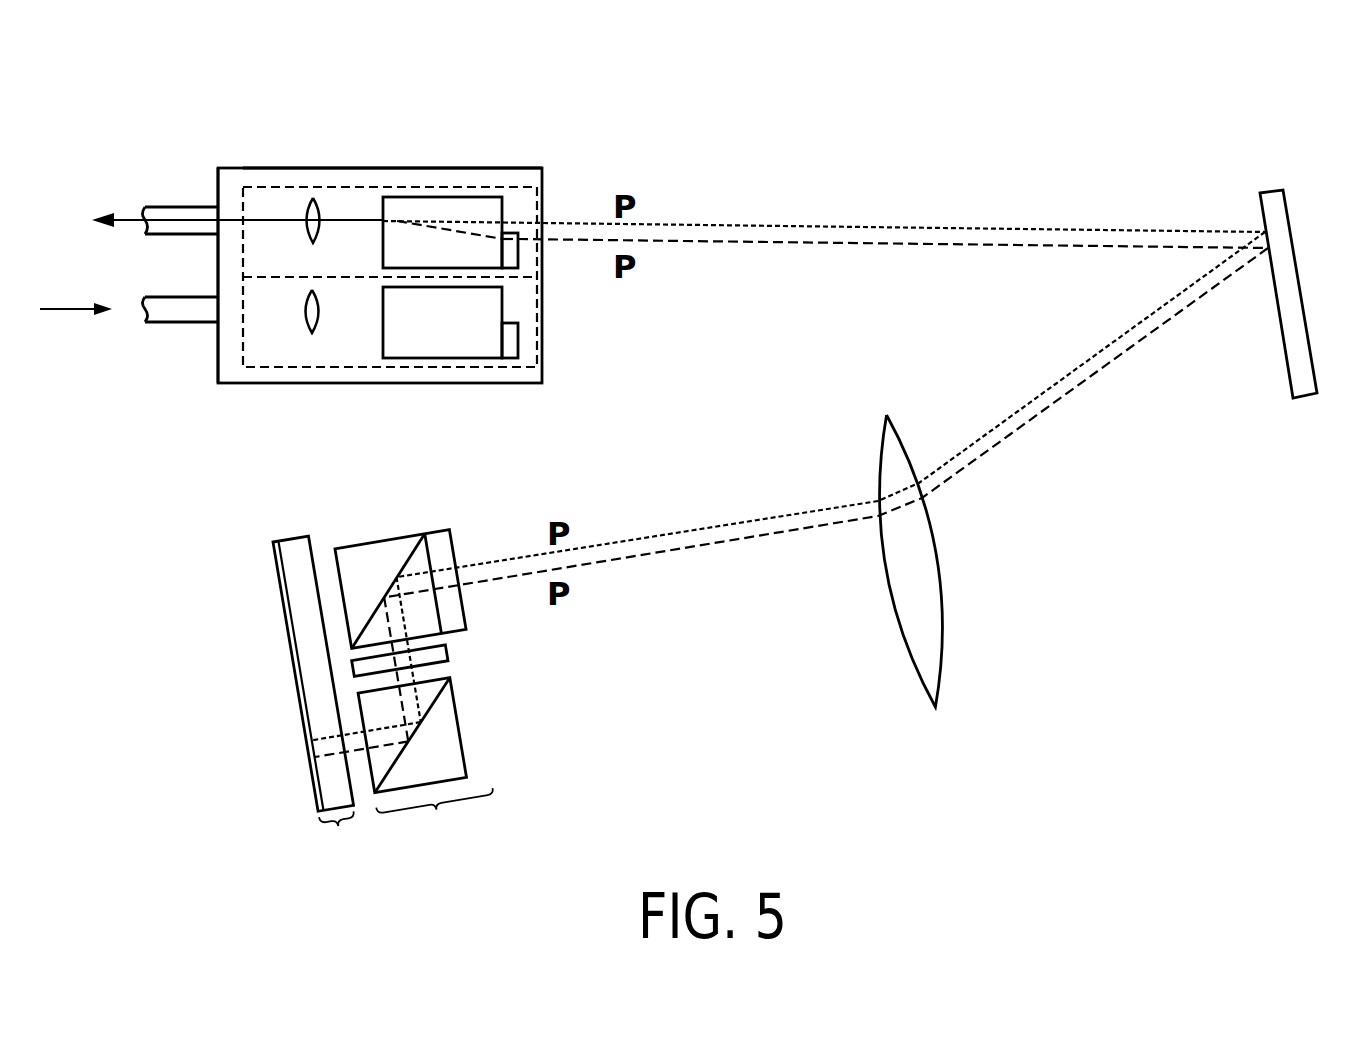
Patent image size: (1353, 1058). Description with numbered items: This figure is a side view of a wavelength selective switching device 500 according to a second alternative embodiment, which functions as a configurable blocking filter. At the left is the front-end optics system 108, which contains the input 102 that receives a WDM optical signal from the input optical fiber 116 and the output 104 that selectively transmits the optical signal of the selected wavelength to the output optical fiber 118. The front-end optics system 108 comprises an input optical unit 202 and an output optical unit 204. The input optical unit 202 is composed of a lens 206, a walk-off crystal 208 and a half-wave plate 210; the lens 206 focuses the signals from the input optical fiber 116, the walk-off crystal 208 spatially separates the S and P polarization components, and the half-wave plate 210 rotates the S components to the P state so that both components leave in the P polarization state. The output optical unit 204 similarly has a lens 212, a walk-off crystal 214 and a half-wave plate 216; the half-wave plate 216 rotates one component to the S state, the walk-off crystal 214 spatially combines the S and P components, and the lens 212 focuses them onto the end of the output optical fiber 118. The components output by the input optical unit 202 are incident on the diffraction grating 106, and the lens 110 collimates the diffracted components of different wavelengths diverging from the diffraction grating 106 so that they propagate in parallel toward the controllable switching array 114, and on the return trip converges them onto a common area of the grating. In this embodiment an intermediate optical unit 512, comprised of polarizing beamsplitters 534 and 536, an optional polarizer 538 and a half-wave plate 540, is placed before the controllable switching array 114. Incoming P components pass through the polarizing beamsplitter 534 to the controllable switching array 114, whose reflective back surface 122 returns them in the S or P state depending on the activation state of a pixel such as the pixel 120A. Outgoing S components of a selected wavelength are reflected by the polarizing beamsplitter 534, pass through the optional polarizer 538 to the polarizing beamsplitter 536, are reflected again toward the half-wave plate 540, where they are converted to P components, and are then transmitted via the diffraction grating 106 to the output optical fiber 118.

The wavelength selective switching device 500 is at (1153, 93).
The input 102 is at (218, 352).
The output 104 is at (219, 217).
The front-end optics system 108 is at (350, 168).
The input optical unit 202 is at (372, 367).
The output optical fiber 118 is at (172, 207).
The input optical fiber 116 is at (168, 322).
The lens 212 is at (306, 212).
The lens 206 is at (310, 333).
The output optical unit 204 is at (412, 197).
The walk-off crystal 214 is at (478, 197).
The half-wave plate 216 is at (518, 258).
The walk-off crystal 208 is at (437, 358).
The half-wave plate 210 is at (512, 358).
The diffraction grating 106 is at (1268, 192).
The lens 110 is at (945, 663).
The back surface 122 is at (275, 538).
The pixel 120A is at (327, 777).
The controllable switching array 114 is at (342, 839).
The intermediate optical unit 512 is at (435, 821).
The polarizing beamsplitter 536 is at (368, 543).
The half-wave plate 540 is at (435, 532).
The polarizer 538 is at (448, 657).
The polarizing beamsplitter 534 is at (467, 720).